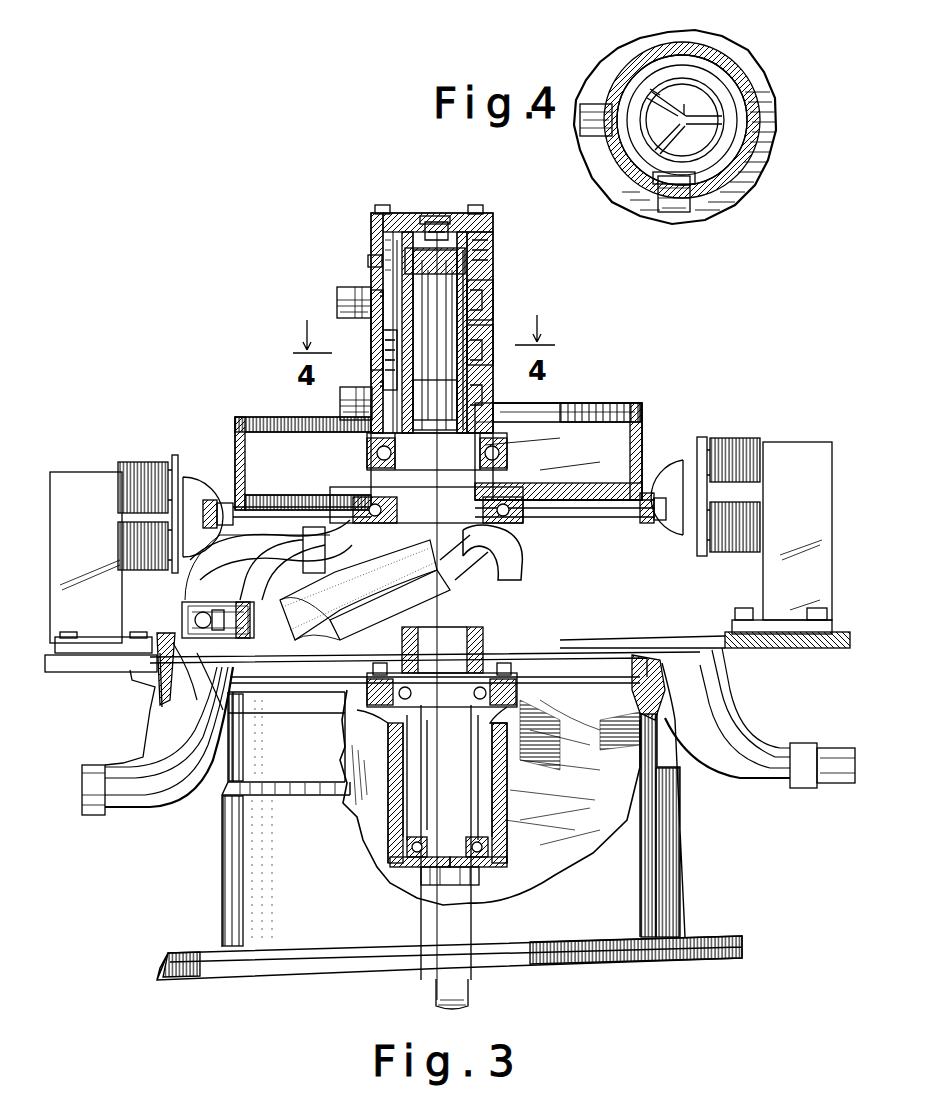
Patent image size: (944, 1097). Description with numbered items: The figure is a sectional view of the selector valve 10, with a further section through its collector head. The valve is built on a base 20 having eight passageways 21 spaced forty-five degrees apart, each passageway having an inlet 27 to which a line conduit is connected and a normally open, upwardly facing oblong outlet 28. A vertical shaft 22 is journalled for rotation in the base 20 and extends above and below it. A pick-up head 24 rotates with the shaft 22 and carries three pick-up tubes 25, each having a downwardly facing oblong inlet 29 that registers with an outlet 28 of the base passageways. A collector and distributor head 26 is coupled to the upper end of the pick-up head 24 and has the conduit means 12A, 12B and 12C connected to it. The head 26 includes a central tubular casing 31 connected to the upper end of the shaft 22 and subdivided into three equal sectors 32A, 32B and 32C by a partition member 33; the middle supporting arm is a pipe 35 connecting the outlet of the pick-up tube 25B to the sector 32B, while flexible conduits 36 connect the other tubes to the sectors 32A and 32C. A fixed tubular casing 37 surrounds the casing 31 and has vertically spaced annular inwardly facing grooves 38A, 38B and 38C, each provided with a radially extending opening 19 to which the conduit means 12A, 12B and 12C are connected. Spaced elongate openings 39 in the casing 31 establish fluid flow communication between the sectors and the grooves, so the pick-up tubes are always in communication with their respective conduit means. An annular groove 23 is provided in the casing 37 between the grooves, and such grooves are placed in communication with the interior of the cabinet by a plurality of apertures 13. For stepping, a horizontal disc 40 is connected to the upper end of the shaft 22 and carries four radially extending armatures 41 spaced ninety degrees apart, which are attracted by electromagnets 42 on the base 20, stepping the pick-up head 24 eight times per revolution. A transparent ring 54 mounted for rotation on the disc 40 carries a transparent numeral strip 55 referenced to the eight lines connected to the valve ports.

In FIG. 3, the selector valve 10 is at (150, 310).
In FIG. 4, the conduit means 12A is at (688, 205).
In FIG. 3, the conduit means 12B is at (350, 298).
In FIG. 4, the conduit means 12C is at (586, 110).
In FIG. 3, the conduit means 12C is at (348, 402).
In FIG. 3, the apertures 13 is at (470, 415).
In FIG. 4, the radially extending opening 19 is at (665, 200).
In FIG. 3, the radially extending opening 19 is at (378, 268).
In FIG. 3, the base 20 is at (232, 843).
In FIG. 3, the passageways 21 is at (144, 729).
In FIG. 3, the vertical shaft 22 is at (478, 640).
In FIG. 3, the annular groove 23 is at (465, 350).
In FIG. 3, the pick-up head 24 is at (560, 568).
In FIG. 3, the pick-up tubes 25 is at (186, 597).
In FIG. 3, the pick-up tube 25B is at (340, 500).
In FIG. 3, the collector and distributor head 26 is at (502, 260).
In FIG. 3, the inlet 27 is at (84, 786).
In FIG. 3, the outlet 28 is at (170, 690).
In FIG. 3, the inlet 29 is at (182, 622).
In FIG. 4, the central tubular casing 31 is at (630, 162).
In FIG. 3, the central tubular casing 31 is at (375, 335).
In FIG. 4, the sector 32A is at (698, 130).
In FIG. 4, the sector 32B is at (645, 85).
In FIG. 4, the sector 32C is at (688, 105).
In FIG. 4, the partition member 33 is at (700, 110).
In FIG. 3, the partition member 33 is at (466, 412).
In FIG. 3, the pipe 35 is at (282, 538).
In FIG. 3, the flexible conduits 36 is at (355, 620).
In FIG. 4, the fixed tubular casing 37 is at (635, 110).
In FIG. 3, the fixed tubular casing 37 is at (385, 365).
In FIG. 4, the annular groove 38A is at (640, 135).
In FIG. 3, the annular groove 38A is at (478, 335).
In FIG. 3, the annular groove 38B is at (480, 300).
In FIG. 3, the annular groove 38C is at (578, 396).
In FIG. 4, the elongate openings 39 is at (715, 150).
In FIG. 3, the elongate openings 39 is at (444, 340).
In FIG. 3, the horizontal disc 40 is at (650, 515).
In FIG. 3, the armatures 41 is at (200, 498).
In FIG. 3, the electromagnets 42 is at (130, 475).
In FIG. 3, the transparent ring 54 is at (649, 413).
In FIG. 3, the transparent numeral strip 55 is at (628, 448).